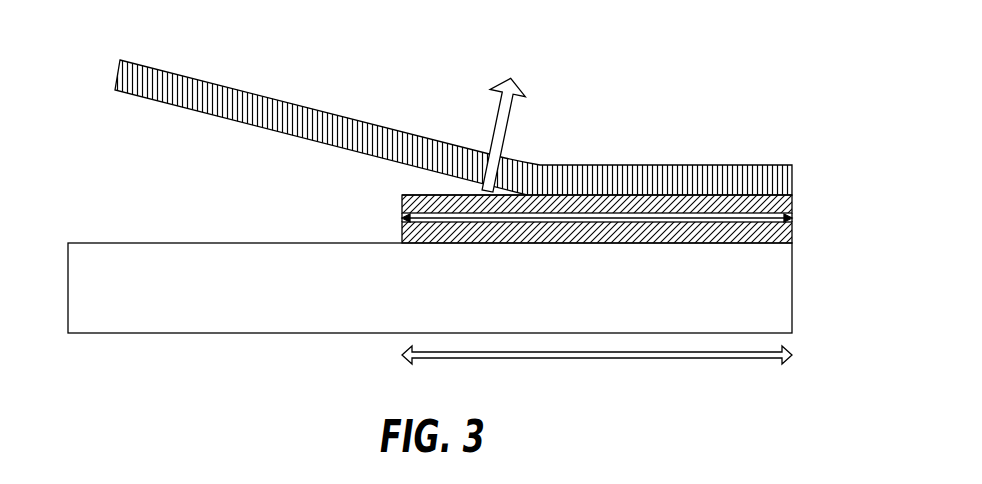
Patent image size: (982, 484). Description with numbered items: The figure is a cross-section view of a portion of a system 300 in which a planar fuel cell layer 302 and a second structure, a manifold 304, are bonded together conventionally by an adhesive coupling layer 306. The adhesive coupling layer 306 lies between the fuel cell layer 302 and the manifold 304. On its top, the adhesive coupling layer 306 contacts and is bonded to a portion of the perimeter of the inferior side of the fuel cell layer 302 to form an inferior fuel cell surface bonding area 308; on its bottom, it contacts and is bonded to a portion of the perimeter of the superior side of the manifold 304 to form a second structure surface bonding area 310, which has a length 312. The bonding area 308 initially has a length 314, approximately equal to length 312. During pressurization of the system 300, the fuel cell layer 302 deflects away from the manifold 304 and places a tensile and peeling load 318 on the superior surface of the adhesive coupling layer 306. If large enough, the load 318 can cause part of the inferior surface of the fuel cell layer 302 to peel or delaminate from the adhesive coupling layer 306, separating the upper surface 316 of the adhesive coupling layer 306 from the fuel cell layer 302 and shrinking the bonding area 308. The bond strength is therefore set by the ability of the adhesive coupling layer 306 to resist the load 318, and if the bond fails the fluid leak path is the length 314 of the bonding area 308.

The system 300 is at (700, 42).
The planar fuel cell layer 302 is at (118, 72).
The manifold 304 is at (82, 292).
The adhesive coupling layer 306 is at (401, 212).
The inferior fuel cell surface bonding area 308 is at (794, 219).
The second structure surface bonding area 310 is at (598, 243).
The length 312 is at (597, 359).
The length 314 is at (654, 223).
The upper surface 316 is at (421, 194).
The tensile and peeling load 318 is at (489, 128).